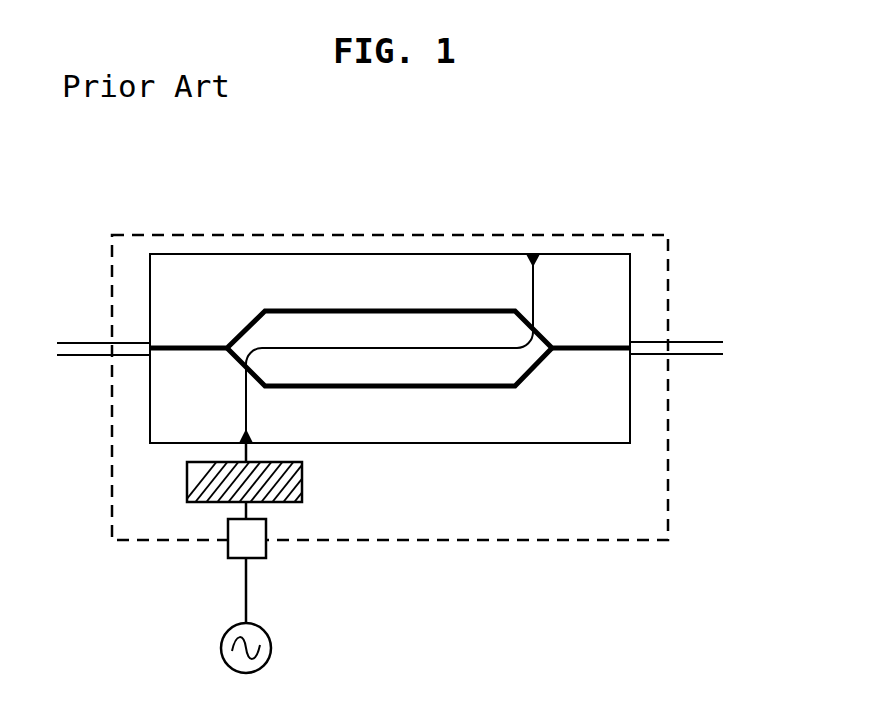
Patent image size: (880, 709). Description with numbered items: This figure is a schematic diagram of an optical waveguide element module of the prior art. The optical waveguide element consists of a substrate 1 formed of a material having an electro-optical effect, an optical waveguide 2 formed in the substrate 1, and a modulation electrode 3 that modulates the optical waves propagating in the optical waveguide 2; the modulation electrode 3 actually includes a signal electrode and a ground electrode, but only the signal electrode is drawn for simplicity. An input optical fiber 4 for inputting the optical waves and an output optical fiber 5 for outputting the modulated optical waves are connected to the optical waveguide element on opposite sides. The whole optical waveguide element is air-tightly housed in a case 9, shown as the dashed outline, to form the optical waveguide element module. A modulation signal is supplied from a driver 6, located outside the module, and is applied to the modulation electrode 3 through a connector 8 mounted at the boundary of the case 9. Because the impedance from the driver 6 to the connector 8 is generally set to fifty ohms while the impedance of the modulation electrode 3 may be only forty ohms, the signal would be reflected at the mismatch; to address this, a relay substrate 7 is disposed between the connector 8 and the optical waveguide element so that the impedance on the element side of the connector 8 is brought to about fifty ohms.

The substrate 1 is at (590, 312).
The optical waveguide 2 is at (342, 298).
The modulation electrode 3 is at (418, 348).
The input optical fiber 4 is at (92, 348).
The output optical fiber 5 is at (690, 357).
The driver 6 is at (272, 648).
The relay substrate 7 is at (207, 502).
The connector 8 is at (247, 539).
The case 9 is at (553, 540).